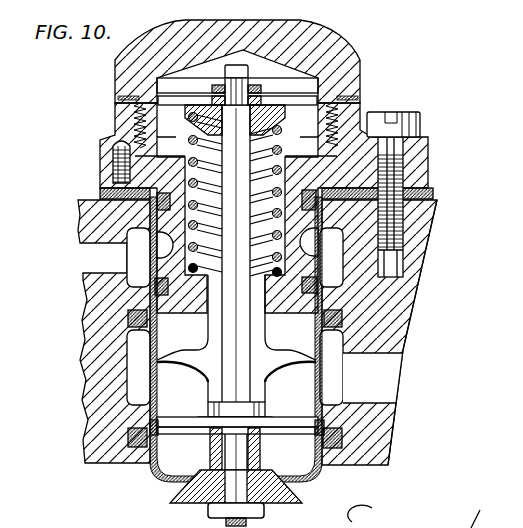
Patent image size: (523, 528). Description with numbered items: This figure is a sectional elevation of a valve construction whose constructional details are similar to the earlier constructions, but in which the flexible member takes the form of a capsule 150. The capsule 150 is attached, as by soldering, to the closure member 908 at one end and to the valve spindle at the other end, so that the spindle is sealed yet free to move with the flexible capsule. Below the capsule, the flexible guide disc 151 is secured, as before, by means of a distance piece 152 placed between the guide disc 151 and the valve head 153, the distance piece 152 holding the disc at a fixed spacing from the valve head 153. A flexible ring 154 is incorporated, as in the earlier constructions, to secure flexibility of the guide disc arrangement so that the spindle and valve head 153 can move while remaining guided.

The closure member 908 is at (365, 120).
The capsule 150 is at (285, 366).
The flexible guide disc 151 is at (292, 427).
The flexible ring 154 is at (262, 466).
The distance piece 152 is at (305, 479).
The valve head 153 is at (297, 496).